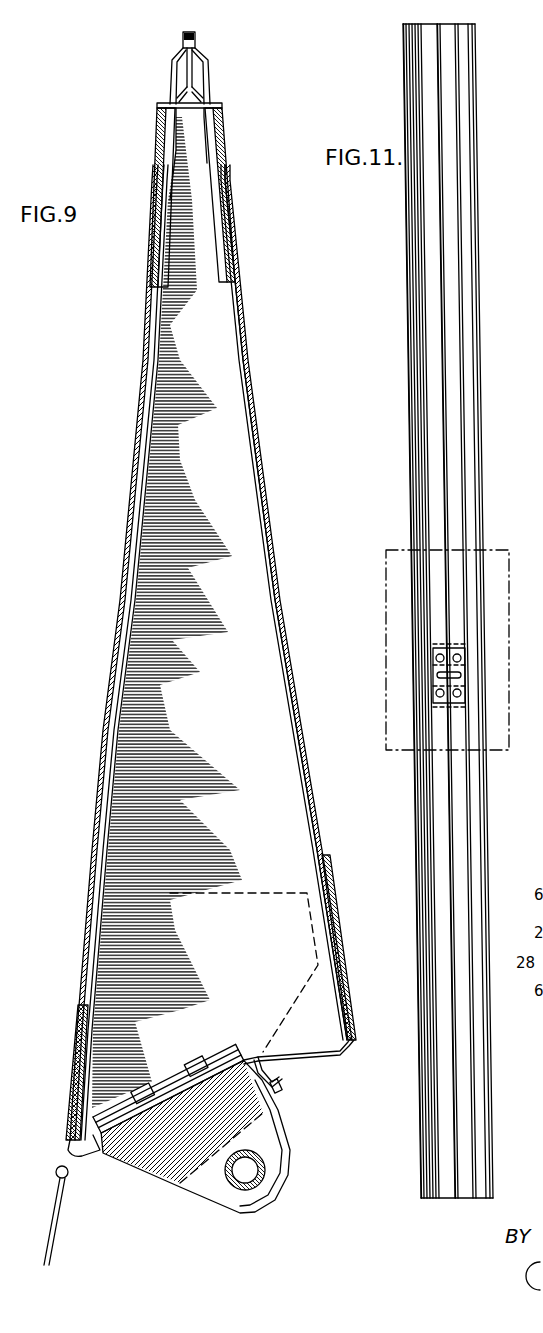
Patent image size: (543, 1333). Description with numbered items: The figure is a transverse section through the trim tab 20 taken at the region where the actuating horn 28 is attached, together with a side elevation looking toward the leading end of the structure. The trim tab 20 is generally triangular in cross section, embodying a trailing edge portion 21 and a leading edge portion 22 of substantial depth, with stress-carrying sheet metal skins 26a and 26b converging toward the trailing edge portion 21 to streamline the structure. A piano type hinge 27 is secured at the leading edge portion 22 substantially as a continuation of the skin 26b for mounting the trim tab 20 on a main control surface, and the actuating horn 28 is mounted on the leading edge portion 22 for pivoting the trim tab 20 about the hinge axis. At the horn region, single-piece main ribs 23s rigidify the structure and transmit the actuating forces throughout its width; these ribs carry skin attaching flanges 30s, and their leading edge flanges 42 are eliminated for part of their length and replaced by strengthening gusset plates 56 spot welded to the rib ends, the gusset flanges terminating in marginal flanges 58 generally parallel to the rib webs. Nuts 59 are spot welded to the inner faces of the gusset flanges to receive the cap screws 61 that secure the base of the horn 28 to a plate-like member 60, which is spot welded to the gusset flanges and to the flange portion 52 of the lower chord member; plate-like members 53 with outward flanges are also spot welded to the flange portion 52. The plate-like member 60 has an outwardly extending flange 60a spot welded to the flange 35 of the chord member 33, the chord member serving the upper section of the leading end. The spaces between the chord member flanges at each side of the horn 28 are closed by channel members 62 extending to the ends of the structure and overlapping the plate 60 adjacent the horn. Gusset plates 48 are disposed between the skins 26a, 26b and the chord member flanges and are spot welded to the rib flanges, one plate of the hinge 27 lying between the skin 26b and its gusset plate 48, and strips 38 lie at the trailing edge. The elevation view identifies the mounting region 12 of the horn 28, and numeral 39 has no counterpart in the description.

In FIG. 11, the mounting region 12 is at (501, 550).
In FIG. 9, the trim tab 20 is at (262, 466).
In FIG. 9, the trailing edge portion 21 is at (180, 54).
In FIG. 11, the leading edge portion 22 is at (473, 408).
In FIG. 9, the main ribs 23s is at (236, 697).
In FIG. 9, the skin 26a is at (290, 652).
In FIG. 9, the skin 26b is at (120, 666).
In FIG. 9, the piano type hinge 27 is at (64, 1180).
In FIG. 11, the piano type hinge 27 is at (410, 316).
In FIG. 9, the actuating horn 28 is at (209, 1202).
In FIG. 11, the actuating horn 28 is at (467, 672).
In FIG. 9, the skin attaching flanges 30s is at (280, 646).
In FIG. 11, the chord member 33 is at (469, 453).
In FIG. 9, the chord member flange 35 is at (284, 1071).
In FIG. 9, the strips 38 is at (205, 62).
In FIG. 9, the stem 39 is at (186, 70).
In FIG. 9, the leading edge flanges 42 is at (298, 1052).
In FIG. 9, the gusset plates 48 is at (228, 231).
In FIG. 9, the flange portion 52 is at (101, 1160).
In FIG. 11, the plate-like members 53 is at (440, 468).
In FIG. 9, the strengthening gusset plates 56 is at (258, 891).
In FIG. 9, the marginal flanges 58 is at (168, 1088).
In FIG. 9, the nuts 59 is at (139, 1093).
In FIG. 9, the plate-like member 60 is at (195, 1136).
In FIG. 9, the outwardly extending flange 60a is at (279, 1088).
In FIG. 9, the cap screws 61 is at (183, 1109).
In FIG. 11, the channel members 62 is at (457, 360).